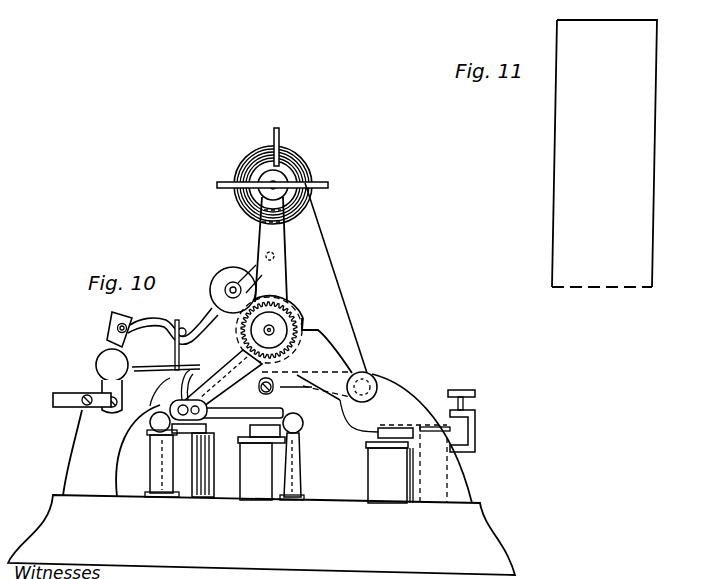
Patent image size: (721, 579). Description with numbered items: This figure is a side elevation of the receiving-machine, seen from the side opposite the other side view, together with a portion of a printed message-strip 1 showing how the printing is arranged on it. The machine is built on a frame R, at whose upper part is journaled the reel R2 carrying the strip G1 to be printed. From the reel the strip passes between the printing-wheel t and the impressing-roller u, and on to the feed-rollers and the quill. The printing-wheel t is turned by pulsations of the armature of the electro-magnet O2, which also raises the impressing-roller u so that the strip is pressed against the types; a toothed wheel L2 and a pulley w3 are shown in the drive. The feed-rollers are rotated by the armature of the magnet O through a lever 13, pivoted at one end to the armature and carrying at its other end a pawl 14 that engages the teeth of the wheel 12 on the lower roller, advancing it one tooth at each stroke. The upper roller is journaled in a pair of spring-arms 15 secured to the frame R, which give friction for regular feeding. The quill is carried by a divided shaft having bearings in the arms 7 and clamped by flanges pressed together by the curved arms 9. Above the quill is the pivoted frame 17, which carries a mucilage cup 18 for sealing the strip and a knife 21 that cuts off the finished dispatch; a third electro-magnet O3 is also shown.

In FIG. 10, the frame R is at (261, 446).
In FIG. 10, the reel R2 is at (272, 176).
In FIG. 10, the cord / tape G1 is at (336, 278).
In FIG. 11, the cord / tape G1 is at (613, 155).
In FIG. 10, the toothed wheel L2 is at (269, 330).
In FIG. 10, the printing-wheel t is at (307, 318).
In FIG. 10, the pulley w3 is at (369, 382).
In FIG. 10, the impressing-roller u is at (255, 386).
In FIG. 10, the toothed wheel 12 is at (219, 382).
In FIG. 10, the lever 13 is at (226, 410).
In FIG. 10, the pivoted frame 17 is at (173, 322).
In FIG. 10, the cup 18 is at (113, 329).
In FIG. 10, the knife 21 is at (185, 345).
In FIG. 10, the spring-arms 15 is at (166, 362).
In FIG. 10, the curved arms 9 is at (160, 389).
In FIG. 10, the pawl 14 is at (179, 385).
In FIG. 10, the arms 7 is at (92, 381).
In FIG. 10, the electro-magnet O2 is at (179, 454).
In FIG. 10, the magnet O is at (271, 456).
In FIG. 10, the electromagnet O3 is at (420, 446).
In FIG. 11, the message card 1 is at (604, 153).